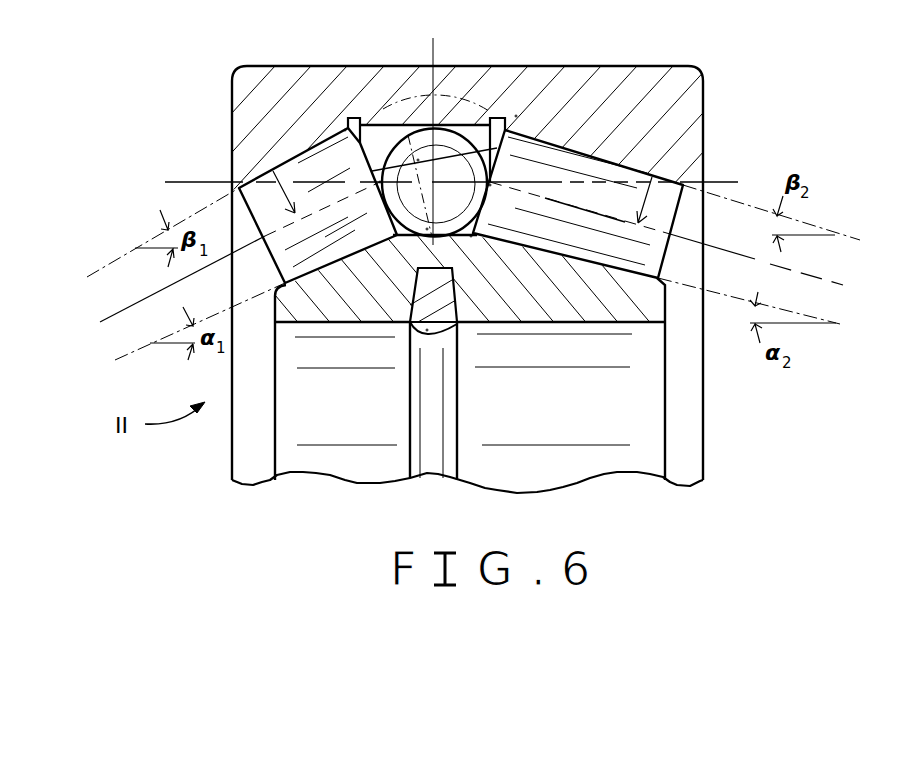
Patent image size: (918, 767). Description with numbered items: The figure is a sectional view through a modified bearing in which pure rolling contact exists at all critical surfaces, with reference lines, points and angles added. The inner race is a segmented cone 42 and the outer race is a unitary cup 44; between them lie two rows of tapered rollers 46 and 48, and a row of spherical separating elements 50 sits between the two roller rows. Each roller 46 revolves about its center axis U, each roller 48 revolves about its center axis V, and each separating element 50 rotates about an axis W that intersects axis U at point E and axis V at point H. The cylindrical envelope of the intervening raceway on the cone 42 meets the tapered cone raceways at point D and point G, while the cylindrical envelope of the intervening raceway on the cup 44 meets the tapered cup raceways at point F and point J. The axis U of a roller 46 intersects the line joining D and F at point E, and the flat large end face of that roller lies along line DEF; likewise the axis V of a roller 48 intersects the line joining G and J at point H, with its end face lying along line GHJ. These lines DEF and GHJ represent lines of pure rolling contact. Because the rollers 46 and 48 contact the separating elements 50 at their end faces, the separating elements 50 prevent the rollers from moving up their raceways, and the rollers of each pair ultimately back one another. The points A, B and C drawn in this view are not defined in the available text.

The cone 42 is at (607, 310).
The cup 44 is at (617, 88).
The tapered rollers 46 is at (307, 173).
The tapered rollers 48 is at (578, 162).
The spherical separating elements 50 is at (445, 155).
The axis of rotation of the spherical separating element W is at (435, 182).
The center axis of roller 46 U is at (172, 284).
The center axis of roller 48 V is at (767, 267).
The point A is at (427, 330).
The point B is at (418, 160).
The line C is at (407, 128).
The point D is at (427, 230).
The point E is at (380, 182).
The point F is at (345, 130).
The point G is at (470, 237).
The point H is at (490, 184).
The point J is at (516, 115).